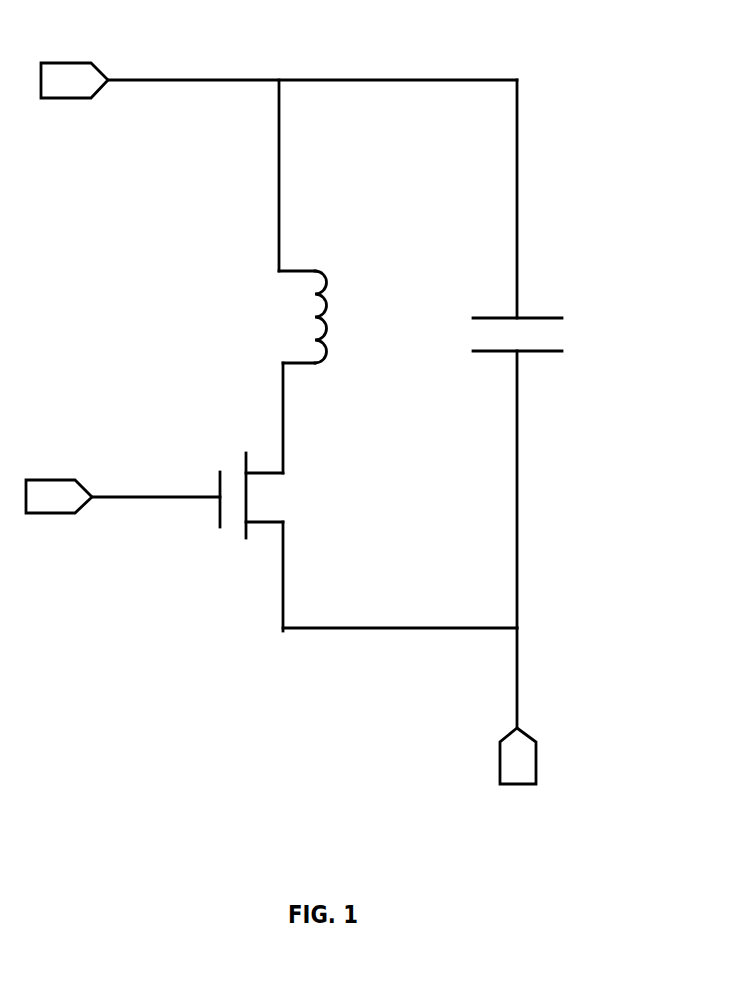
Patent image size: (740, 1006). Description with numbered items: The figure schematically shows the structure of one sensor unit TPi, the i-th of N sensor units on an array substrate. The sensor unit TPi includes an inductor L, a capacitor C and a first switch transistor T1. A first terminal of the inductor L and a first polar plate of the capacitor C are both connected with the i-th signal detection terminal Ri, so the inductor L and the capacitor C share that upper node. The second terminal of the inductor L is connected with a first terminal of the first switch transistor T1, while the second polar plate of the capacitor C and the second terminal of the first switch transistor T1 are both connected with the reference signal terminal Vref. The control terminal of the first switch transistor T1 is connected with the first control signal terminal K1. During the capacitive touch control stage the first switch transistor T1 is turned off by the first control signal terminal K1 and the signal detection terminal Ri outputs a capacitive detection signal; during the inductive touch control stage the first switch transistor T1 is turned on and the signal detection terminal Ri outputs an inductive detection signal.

The signal detection terminal Ri is at (279, 103).
The sensor unit TPi is at (553, 167).
The inductor L is at (319, 276).
The capacitor C is at (532, 473).
The first control signal terminal K1 is at (123, 475).
The first switch transistor T1 is at (272, 542).
The reference signal terminal Vref is at (409, 706).